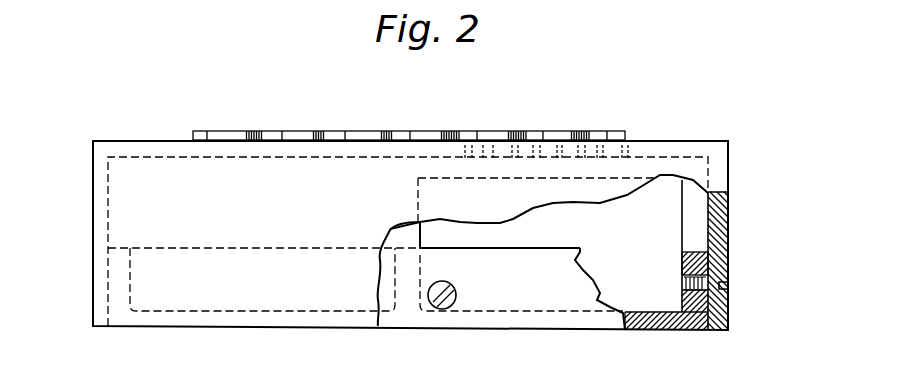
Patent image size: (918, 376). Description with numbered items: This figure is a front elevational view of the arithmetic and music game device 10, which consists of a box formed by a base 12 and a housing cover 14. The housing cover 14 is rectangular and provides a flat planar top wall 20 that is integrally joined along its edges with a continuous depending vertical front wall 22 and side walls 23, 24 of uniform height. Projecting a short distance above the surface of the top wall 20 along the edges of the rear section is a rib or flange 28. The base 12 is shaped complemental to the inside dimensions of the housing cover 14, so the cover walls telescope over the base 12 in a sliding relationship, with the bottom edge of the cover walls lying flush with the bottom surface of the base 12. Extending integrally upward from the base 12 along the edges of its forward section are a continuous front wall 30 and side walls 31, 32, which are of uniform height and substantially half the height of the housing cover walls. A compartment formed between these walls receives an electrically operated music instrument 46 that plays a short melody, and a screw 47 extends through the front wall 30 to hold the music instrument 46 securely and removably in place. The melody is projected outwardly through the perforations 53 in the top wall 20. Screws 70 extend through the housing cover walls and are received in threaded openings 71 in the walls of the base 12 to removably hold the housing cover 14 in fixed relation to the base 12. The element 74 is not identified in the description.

The arithmetic and music game device 10 is at (439, 196).
The base 12 is at (654, 322).
The housing cover 14 is at (735, 172).
The top wall 20 is at (667, 141).
The front wall 22 is at (548, 203).
The side wall 23 is at (718, 230).
The side wall 24 is at (98, 192).
The rib or flange 28 is at (205, 131).
The front wall 30 is at (573, 278).
The side wall 31 is at (126, 278).
The side wall 32 is at (693, 263).
The music instrument 46 is at (618, 263).
The screw 47 is at (457, 292).
The perforations 53 is at (535, 157).
The screws 70 is at (725, 291).
The threaded openings 71 is at (684, 296).
The key separator 74 is at (298, 132).